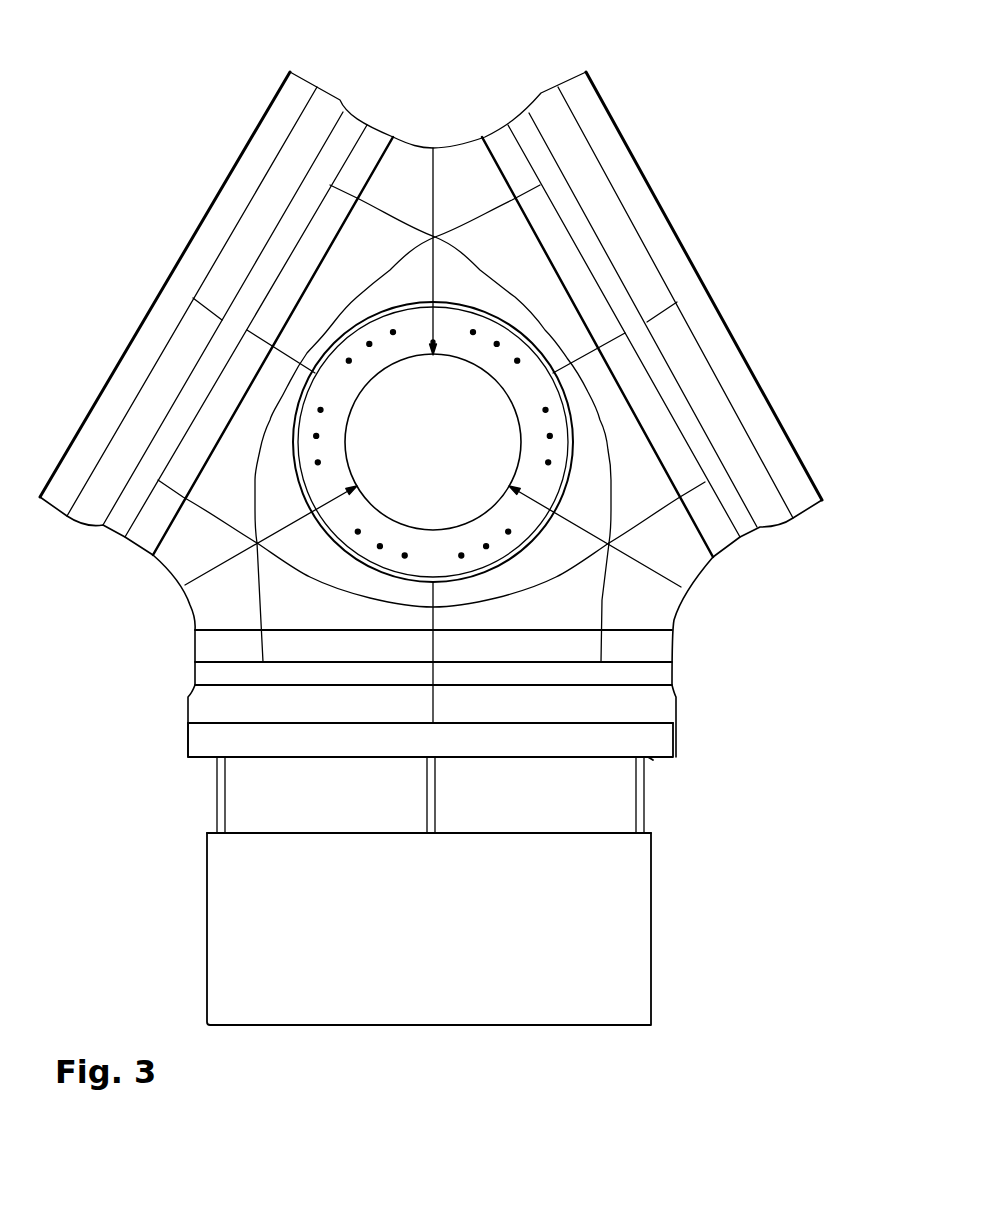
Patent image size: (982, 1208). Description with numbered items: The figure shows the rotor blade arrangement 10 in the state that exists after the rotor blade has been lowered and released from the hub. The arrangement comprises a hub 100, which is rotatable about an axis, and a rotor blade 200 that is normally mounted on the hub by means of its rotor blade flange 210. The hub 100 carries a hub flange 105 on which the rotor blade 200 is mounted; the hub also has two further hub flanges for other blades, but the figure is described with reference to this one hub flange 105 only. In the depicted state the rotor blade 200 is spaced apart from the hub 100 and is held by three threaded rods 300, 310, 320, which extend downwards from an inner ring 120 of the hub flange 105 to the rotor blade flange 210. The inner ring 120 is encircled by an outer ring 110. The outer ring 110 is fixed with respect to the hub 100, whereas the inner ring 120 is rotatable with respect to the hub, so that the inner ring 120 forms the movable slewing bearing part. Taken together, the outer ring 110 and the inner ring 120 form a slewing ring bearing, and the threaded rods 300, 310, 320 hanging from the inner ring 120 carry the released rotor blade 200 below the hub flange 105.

The rotor blade arrangement 10 is at (380, 80).
The hub 100 is at (395, 177).
The hub flange 105 is at (626, 752).
The outer ring 110 is at (664, 747).
The inner ring 120 is at (574, 745).
The rotor blade 200 is at (602, 962).
The rotor blade flange 210 is at (457, 835).
The threaded rod 300 is at (641, 817).
The threaded rod 310 is at (427, 803).
The threaded rod 320 is at (218, 783).